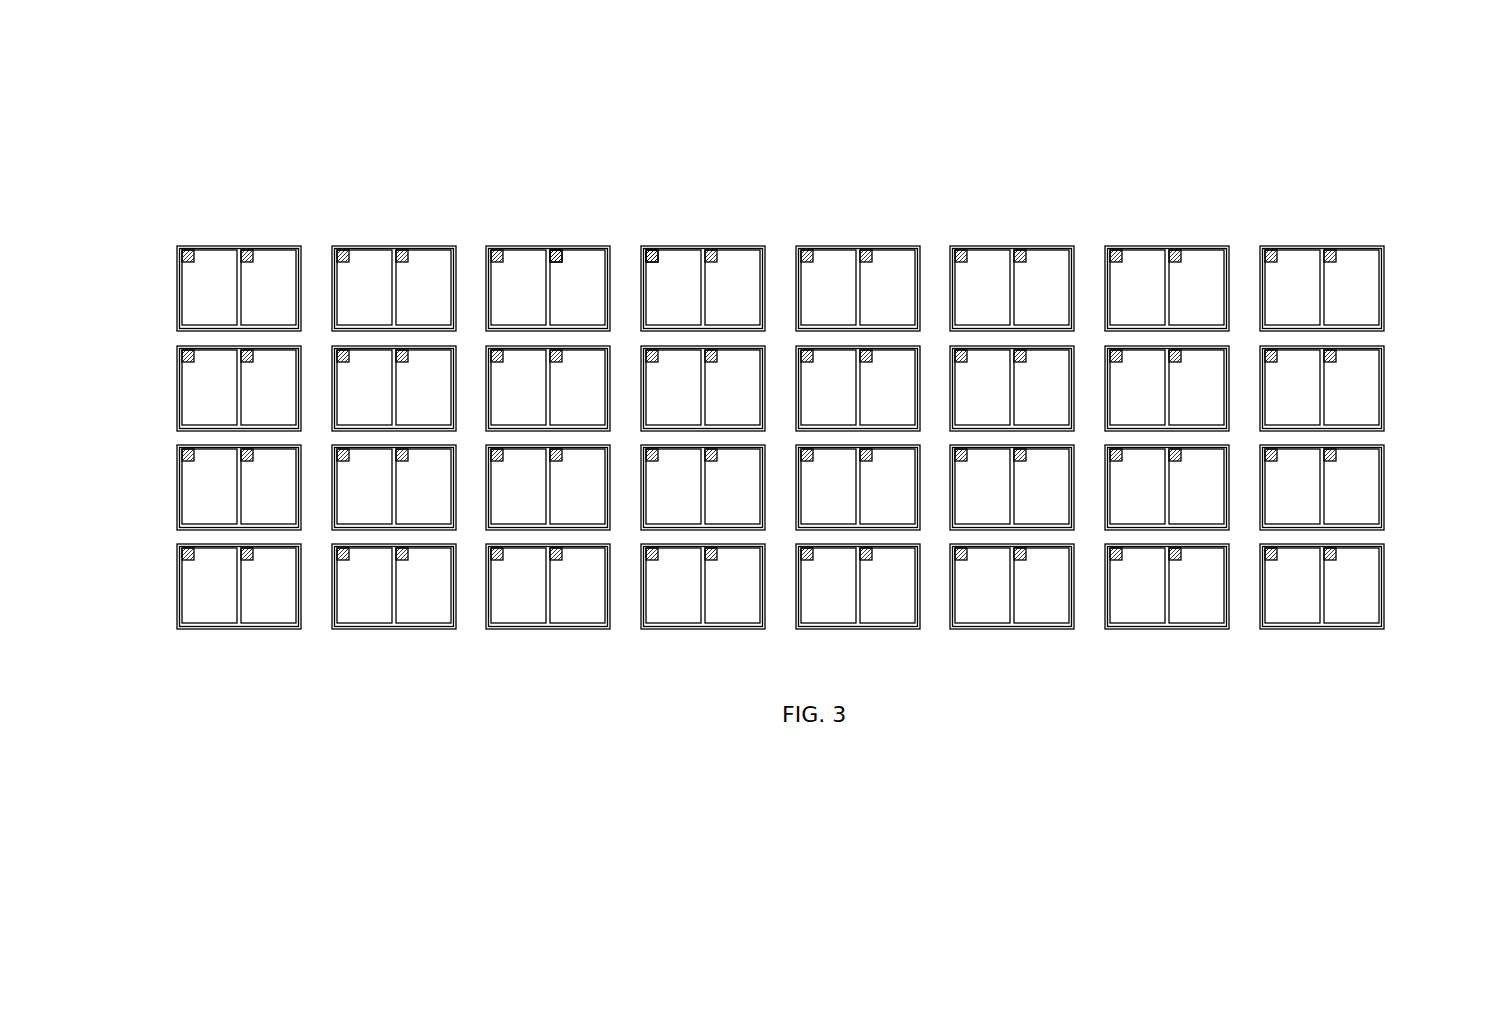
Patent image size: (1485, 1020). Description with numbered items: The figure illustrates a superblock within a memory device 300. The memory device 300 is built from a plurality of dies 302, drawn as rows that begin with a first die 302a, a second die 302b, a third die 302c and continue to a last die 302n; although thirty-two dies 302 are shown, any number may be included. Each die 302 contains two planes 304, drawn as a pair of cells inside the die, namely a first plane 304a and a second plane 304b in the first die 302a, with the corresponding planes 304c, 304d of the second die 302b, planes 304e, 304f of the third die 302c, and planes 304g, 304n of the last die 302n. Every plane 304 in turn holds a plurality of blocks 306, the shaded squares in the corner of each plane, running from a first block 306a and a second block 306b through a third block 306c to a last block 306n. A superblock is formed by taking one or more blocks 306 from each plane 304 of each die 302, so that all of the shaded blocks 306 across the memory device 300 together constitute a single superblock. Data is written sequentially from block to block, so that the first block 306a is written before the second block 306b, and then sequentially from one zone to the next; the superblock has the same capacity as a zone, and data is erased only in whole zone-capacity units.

The memory device 300 is at (272, 62).
The dies 302 is at (497, 247).
The die 302a is at (177, 290).
The die 302b is at (177, 390).
The die 302c is at (177, 489).
The die 302n is at (177, 588).
The planes 304 is at (385, 236).
The first plane 304a is at (202, 236).
The second plane 304b is at (264, 236).
The plane P2 304c is at (232, 415).
The plane P3 304d is at (291, 415).
The plane P4 304e is at (232, 514).
The plane P7 304f is at (291, 514).
The plane P6 304g is at (232, 613).
The plane Pn 304n is at (291, 613).
The block 306 is at (556, 248).
The block B0 306a is at (187, 205).
The block B1 306b is at (252, 205).
The block 306c is at (340, 248).
The block 306n is at (407, 205).